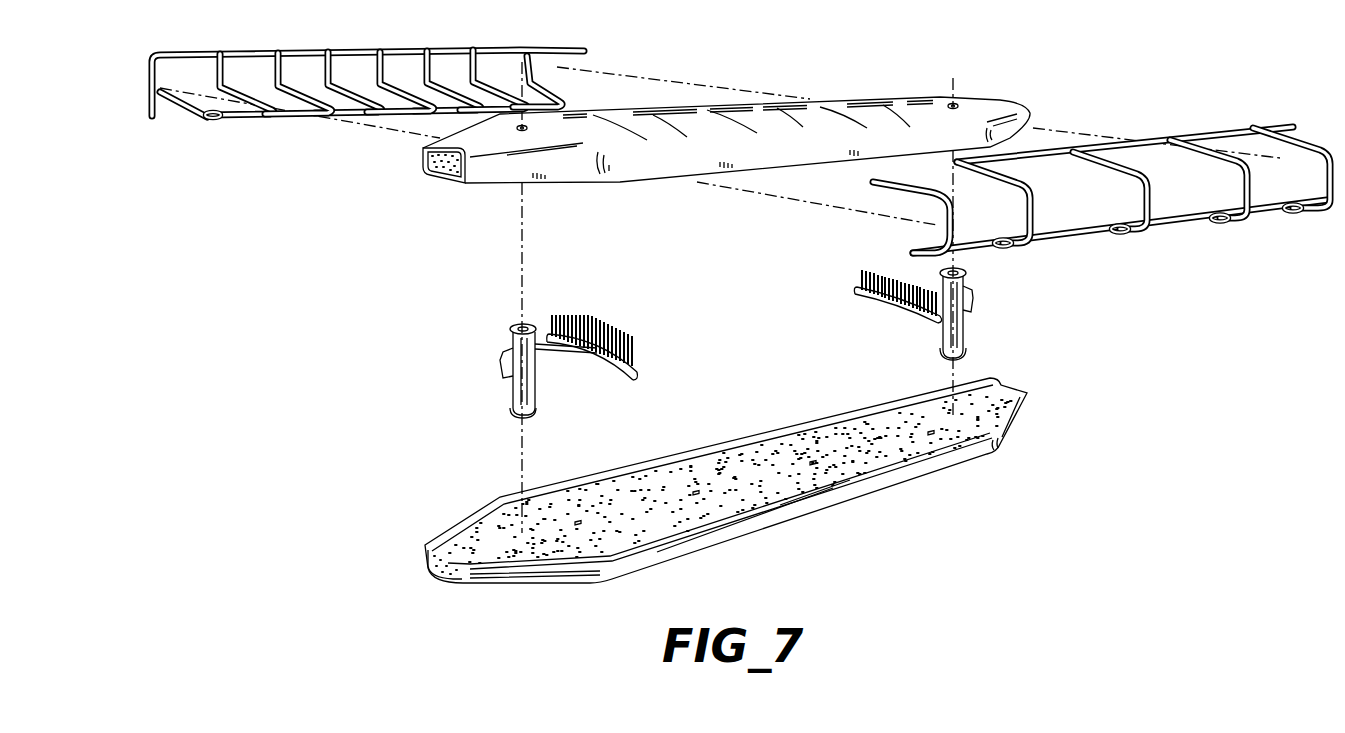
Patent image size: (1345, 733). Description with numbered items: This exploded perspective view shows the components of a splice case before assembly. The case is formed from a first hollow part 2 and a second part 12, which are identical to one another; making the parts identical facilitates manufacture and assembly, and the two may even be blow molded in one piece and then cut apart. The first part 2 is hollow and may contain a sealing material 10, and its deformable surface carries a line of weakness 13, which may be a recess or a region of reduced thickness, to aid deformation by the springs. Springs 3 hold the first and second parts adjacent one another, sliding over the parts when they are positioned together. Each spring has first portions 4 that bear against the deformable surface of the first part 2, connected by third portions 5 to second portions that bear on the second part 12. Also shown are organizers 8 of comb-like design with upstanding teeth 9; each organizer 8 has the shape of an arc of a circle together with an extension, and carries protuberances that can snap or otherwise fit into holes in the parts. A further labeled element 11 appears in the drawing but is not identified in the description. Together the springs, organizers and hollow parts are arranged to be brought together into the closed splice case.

The first hollow part 2 is at (642, 183).
The springs 3 is at (192, 114).
The first portions 4 is at (264, 58).
The third portions 5 is at (377, 63).
The organizer 8 is at (597, 350).
The teeth 9 is at (637, 347).
The sealing material 10 is at (448, 178).
The clip foot 11 is at (243, 113).
The second part 12 is at (722, 545).
The line of weakness 13 is at (755, 103).